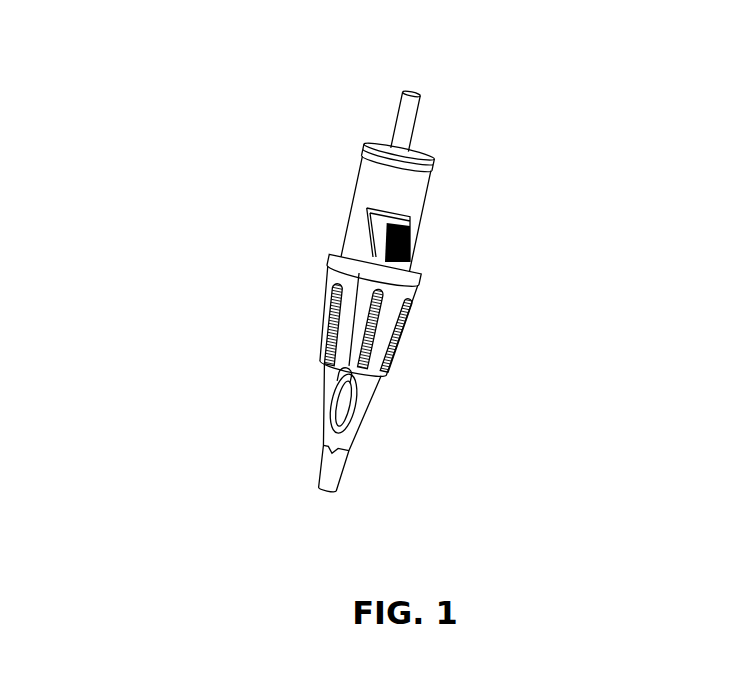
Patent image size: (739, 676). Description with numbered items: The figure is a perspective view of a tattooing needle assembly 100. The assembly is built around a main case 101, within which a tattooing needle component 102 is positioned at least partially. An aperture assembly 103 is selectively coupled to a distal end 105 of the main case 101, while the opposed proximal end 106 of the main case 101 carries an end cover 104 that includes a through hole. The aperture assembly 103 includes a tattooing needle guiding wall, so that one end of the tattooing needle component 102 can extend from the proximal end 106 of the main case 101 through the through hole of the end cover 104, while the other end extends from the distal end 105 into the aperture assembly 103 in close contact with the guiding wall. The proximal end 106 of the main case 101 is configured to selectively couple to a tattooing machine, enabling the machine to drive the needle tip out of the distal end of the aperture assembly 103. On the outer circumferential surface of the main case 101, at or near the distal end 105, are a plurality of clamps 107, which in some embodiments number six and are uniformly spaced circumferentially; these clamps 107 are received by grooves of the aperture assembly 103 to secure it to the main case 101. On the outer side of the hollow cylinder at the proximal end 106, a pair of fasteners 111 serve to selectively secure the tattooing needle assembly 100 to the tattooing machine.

The tattooing needle assembly 100 is at (158, 157).
The main case 101 is at (320, 243).
The tattooing needle component 102 is at (410, 108).
The aperture assembly 103 is at (358, 415).
The end cover 104 is at (427, 148).
The distal end 105 is at (323, 298).
The proximal end 106 is at (357, 178).
The clamp 107 is at (398, 362).
The fastener 111 is at (420, 248).